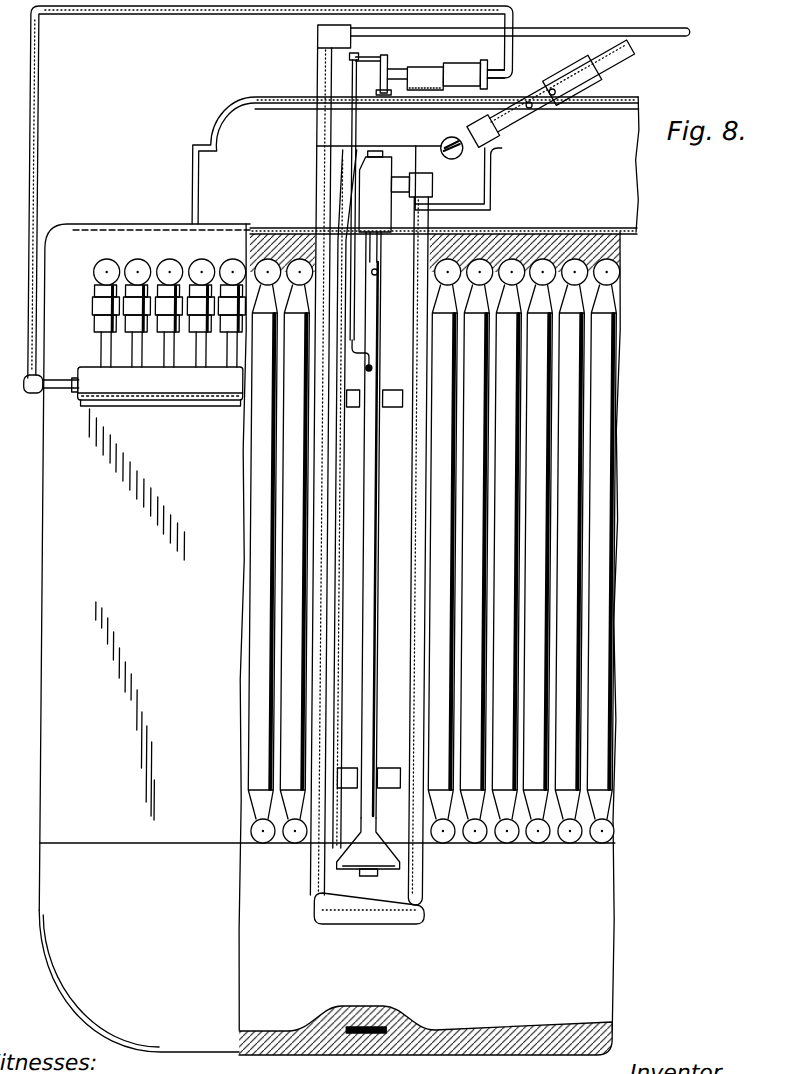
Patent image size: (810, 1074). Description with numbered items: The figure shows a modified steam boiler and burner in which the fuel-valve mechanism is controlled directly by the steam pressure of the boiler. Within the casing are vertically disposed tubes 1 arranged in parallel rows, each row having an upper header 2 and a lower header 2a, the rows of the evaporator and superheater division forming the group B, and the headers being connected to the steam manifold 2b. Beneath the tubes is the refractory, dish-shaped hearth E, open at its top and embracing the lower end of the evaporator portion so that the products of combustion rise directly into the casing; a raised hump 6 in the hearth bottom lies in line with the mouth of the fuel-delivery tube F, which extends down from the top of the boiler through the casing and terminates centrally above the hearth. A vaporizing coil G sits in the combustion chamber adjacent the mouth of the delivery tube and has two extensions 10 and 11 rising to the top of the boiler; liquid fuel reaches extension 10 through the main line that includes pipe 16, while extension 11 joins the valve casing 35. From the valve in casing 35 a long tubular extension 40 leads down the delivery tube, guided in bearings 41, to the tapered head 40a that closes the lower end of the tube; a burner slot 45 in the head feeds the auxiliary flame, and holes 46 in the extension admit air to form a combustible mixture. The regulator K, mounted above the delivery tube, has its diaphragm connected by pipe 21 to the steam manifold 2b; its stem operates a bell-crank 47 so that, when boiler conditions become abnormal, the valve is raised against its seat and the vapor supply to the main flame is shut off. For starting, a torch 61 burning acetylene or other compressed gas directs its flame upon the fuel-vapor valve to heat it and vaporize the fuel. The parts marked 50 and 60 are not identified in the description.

The pipe 21 is at (41, 91).
The vaporizer extension 10 is at (326, 74).
The bell-crank 47 is at (386, 58).
The regulator-valve K is at (464, 72).
The pipe 16 is at (668, 36).
The casing top 50 is at (623, 98).
The holes 46 is at (354, 119).
The cock 60 is at (452, 137).
The torch 61 is at (519, 128).
The valve casing 35 is at (362, 197).
The vaporizer extension 11 is at (448, 205).
The upper header 2 is at (143, 268).
The steam manifold 2b is at (167, 407).
The lower header 2a is at (270, 846).
The bearings 41 is at (352, 404).
The tube group B is at (316, 506).
The tubular extension 40 is at (378, 551).
The fuel-delivery tube F is at (342, 657).
The tubes 1 is at (581, 733).
The tapered head 40a is at (378, 850).
The burner opening 45 is at (388, 877).
The vaporizing coil G is at (367, 908).
The hump 6 is at (388, 1006).
The bowl-shaped hearth E is at (586, 973).